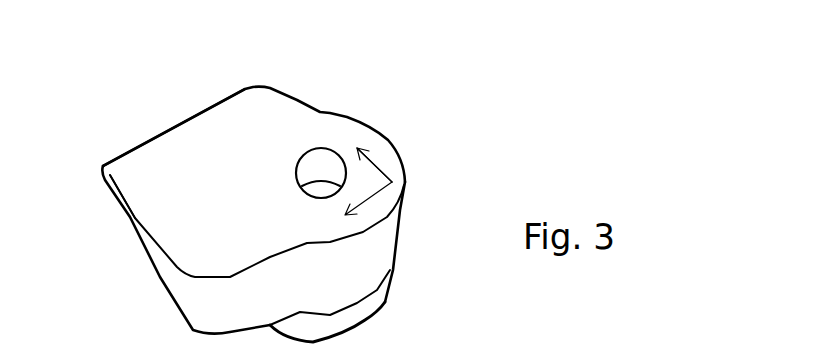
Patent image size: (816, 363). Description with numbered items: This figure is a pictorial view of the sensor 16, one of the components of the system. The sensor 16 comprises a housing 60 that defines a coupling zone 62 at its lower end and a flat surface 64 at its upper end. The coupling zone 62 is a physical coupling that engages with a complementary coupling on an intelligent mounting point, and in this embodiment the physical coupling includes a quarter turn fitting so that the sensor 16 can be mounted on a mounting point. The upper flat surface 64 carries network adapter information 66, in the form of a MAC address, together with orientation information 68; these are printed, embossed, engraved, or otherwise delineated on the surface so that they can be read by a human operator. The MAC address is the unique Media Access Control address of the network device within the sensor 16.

The sensor 16 is at (348, 102).
The housing 60 is at (130, 213).
The coupling zone 62 is at (385, 303).
The flat surface 64 is at (115, 160).
The network adapter information 66 is at (197, 127).
The orientation information 68 is at (385, 170).